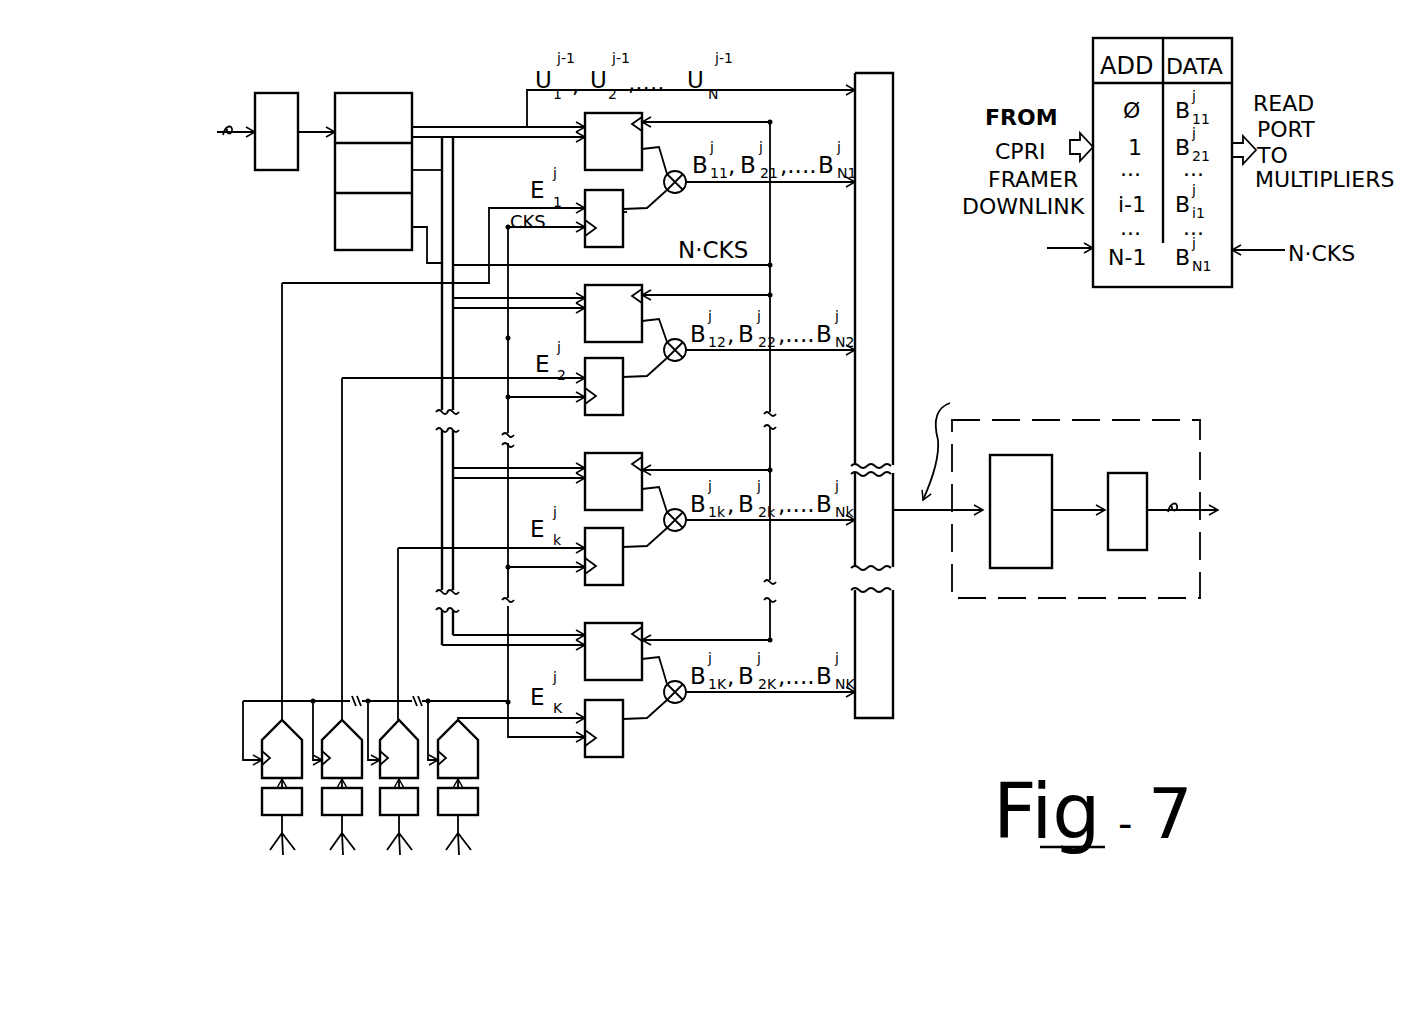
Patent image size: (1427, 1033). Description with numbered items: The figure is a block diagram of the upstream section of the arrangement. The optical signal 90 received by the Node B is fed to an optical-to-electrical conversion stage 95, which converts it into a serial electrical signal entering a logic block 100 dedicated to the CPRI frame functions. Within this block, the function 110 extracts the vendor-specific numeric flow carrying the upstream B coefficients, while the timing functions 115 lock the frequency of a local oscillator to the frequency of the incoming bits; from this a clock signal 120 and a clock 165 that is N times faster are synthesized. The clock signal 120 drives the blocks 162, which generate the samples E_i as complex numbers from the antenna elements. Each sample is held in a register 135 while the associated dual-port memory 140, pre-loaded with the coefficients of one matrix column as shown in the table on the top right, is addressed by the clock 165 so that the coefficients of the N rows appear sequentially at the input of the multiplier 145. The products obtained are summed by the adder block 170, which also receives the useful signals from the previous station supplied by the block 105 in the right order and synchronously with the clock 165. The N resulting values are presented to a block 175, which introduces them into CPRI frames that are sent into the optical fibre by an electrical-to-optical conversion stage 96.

The optical signal 90 is at (162, 136).
The optical-to-electrical conversion stage 95 is at (262, 100).
The electrical-to-optical conversion stage 96 is at (1133, 487).
The logic block 100 is at (407, 78).
The block 105 is at (345, 175).
The function 110 is at (353, 103).
The timing functions 115 is at (350, 245).
The clock signal 120 is at (508, 338).
The register 135 is at (597, 238).
The dual-port memory 140 is at (620, 122).
The multiplier 145 is at (682, 192).
The blocks 162 is at (338, 735).
The clock 165 is at (649, 224).
The adder block 170 is at (893, 545).
The block 175 is at (1170, 602).